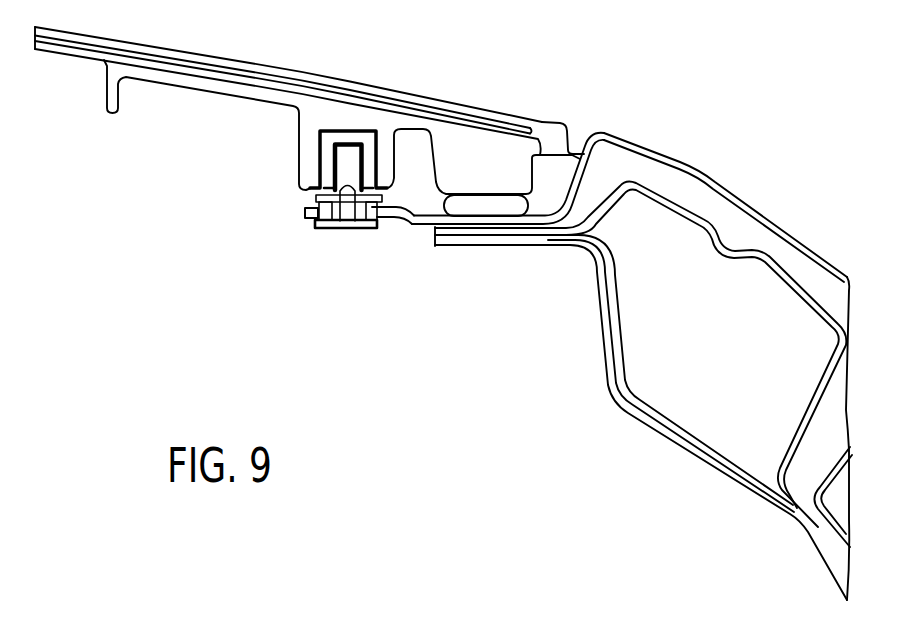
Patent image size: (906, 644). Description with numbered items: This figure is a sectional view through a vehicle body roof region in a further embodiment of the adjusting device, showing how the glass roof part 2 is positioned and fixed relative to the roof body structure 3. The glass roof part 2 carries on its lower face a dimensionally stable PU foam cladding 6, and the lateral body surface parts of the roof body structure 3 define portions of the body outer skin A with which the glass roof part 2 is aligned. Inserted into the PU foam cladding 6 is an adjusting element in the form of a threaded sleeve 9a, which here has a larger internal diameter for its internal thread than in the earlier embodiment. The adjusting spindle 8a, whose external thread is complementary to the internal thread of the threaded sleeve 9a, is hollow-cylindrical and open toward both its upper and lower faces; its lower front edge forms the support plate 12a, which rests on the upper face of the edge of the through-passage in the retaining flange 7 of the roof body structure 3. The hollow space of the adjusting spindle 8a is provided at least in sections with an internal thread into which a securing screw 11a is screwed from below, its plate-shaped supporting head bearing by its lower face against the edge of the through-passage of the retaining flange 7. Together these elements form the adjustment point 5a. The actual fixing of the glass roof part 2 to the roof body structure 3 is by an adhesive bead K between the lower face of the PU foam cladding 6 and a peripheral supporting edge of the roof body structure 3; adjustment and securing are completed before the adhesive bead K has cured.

The glass roof part 2 is at (408, 94).
The PU foam cladding 6 is at (300, 127).
The threaded sleeve 9a is at (318, 156).
The adjusting spindle 8a is at (318, 198).
The securing screw 11a is at (365, 228).
The adjustment point 5a is at (302, 232).
The support plate 12a is at (376, 208).
The retaining flange 7 is at (421, 227).
The adhesive bead K is at (484, 203).
The roof body structure 3 is at (600, 323).
The body outer skin A is at (700, 168).